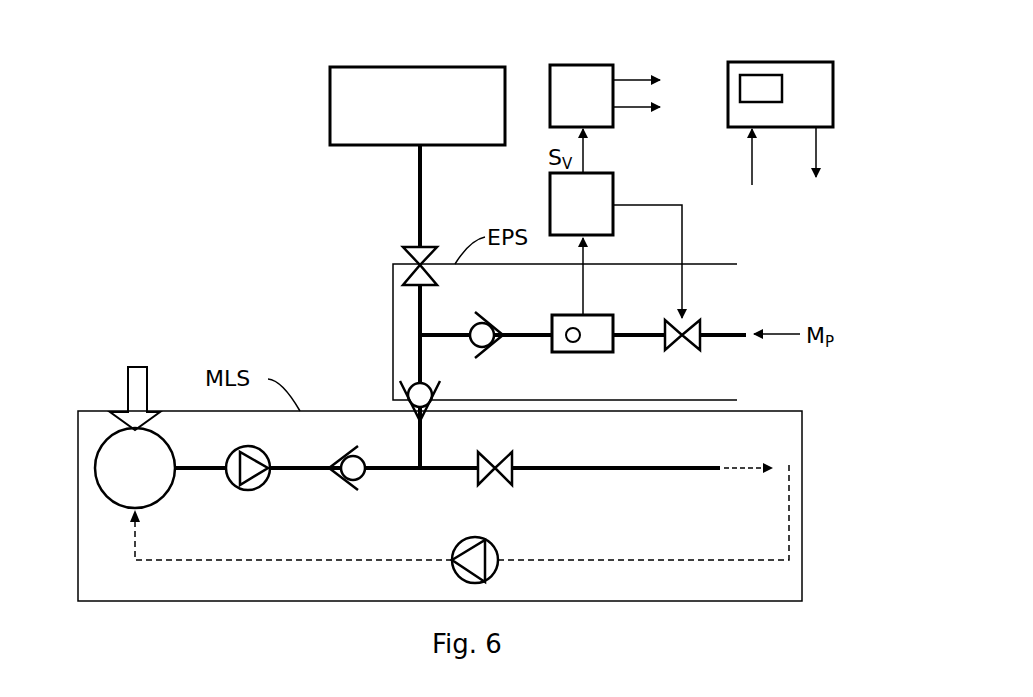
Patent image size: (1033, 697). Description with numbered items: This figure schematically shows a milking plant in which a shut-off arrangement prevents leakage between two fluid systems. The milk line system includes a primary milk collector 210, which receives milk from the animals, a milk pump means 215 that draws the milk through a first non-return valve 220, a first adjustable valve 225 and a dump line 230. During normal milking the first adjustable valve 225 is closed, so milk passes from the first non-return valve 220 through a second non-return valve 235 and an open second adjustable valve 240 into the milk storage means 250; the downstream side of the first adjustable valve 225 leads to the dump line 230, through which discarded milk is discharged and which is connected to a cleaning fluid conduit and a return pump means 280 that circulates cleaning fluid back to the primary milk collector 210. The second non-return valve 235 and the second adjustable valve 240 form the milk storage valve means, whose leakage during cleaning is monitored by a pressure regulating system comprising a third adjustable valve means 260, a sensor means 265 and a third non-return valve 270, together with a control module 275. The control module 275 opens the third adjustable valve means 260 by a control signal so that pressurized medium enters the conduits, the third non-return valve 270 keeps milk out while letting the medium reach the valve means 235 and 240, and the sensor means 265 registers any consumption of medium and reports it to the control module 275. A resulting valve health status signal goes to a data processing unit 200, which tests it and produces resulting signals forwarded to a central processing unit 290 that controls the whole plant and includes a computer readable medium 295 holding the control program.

The data processing unit 200 is at (580, 65).
The primary milk collector 210 is at (110, 440).
The milk pump means 215 is at (245, 490).
The first non-return valve 220 is at (342, 490).
The first adjustable valve 225 is at (500, 486).
The dump line 230 is at (630, 470).
The second non-return valve 235 is at (406, 388).
The second adjustable valve 240 is at (403, 254).
The milk storage means 250 is at (330, 107).
The third adjustable valve means 260 is at (672, 348).
The sensor means 265 is at (568, 315).
The third non-return valve 270 is at (492, 350).
The control module 275 is at (613, 196).
The return pump means 280 is at (490, 546).
The central processing unit 290 is at (763, 104).
The computer readable medium 295 is at (793, 62).